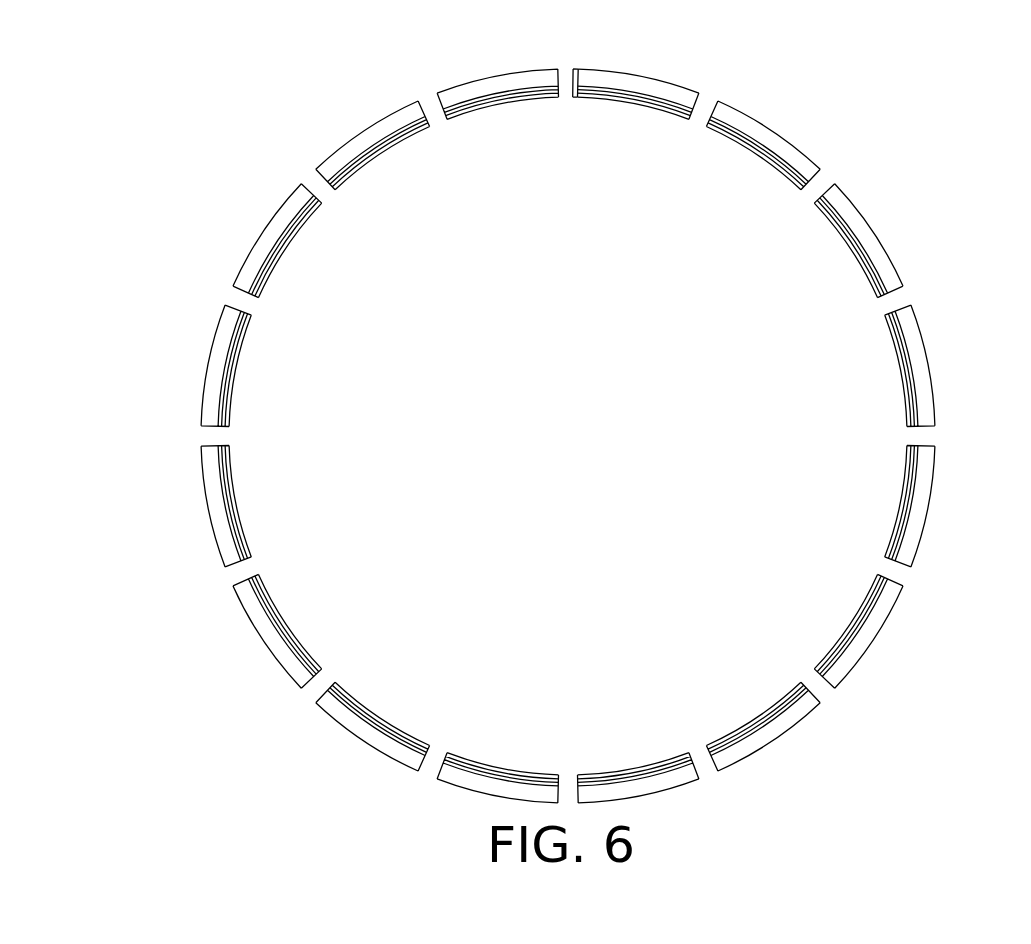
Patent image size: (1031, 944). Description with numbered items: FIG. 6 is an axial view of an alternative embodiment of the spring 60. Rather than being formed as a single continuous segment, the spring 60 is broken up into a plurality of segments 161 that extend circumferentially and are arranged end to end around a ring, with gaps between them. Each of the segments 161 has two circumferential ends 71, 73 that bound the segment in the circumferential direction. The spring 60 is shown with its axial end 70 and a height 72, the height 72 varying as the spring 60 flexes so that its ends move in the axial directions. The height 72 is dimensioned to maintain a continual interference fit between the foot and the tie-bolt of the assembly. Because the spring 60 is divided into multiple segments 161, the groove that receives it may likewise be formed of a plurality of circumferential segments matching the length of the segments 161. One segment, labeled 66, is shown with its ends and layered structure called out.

The spring 60 is at (870, 186).
The segments 161 is at (881, 260).
The first arcuate segment 66 is at (690, 92).
The axial end 70 is at (632, 88).
The circumferential end 71 is at (580, 82).
The height 72 is at (566, 86).
The circumferential end 73 is at (697, 106).